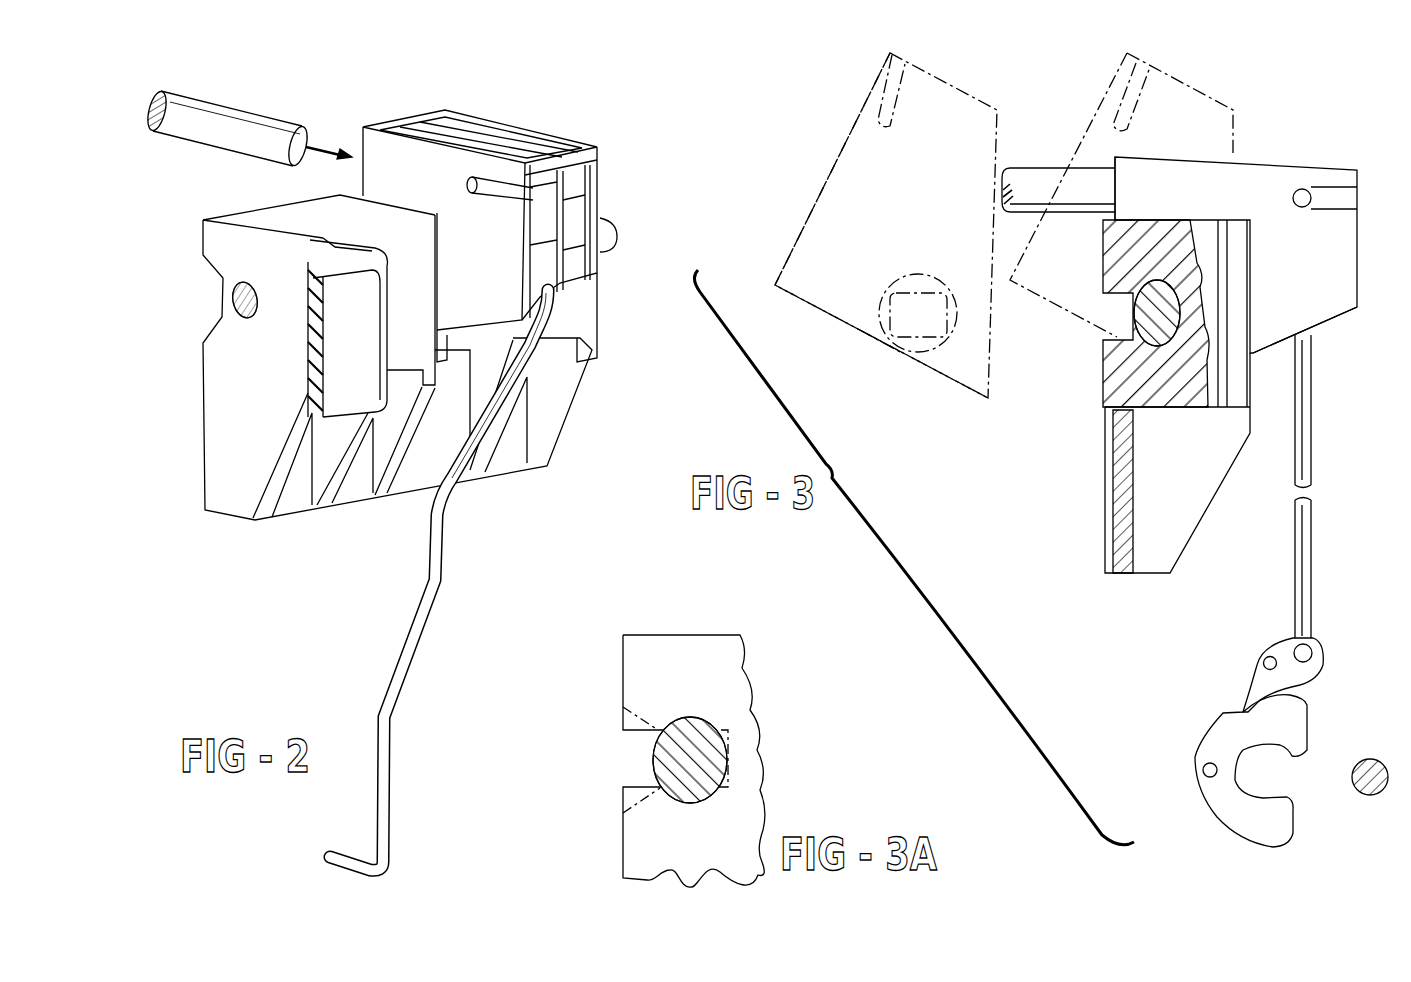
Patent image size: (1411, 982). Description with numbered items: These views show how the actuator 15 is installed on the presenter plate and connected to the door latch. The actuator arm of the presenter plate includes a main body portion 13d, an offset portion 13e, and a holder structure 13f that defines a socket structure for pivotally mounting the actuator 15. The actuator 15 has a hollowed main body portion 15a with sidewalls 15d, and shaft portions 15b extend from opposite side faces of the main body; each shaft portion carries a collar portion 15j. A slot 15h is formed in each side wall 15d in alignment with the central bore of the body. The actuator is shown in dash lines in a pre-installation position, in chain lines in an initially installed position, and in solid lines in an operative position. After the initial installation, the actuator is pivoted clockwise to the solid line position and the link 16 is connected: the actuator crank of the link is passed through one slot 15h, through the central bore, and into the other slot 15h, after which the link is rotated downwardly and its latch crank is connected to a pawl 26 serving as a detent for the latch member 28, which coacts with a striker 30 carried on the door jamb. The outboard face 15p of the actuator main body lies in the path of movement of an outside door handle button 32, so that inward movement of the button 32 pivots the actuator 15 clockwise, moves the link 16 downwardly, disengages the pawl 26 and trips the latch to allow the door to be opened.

In FIG. 2, the main body portion 13d is at (328, 346).
In FIG. 3, the main body portion 13d is at (1240, 382).
In FIG. 2, the offset portion 13e is at (335, 256).
In FIG. 2, the holder structure 13f is at (204, 233).
In FIG. 2, the actuator 15 is at (533, 129).
In FIG. 3, the actuator 15 is at (853, 119).
In FIG. 3, the main body portion 15a is at (820, 185).
In FIG. 3, the shaft portions 15b is at (888, 347).
In FIG. 3, the sidewalls 15d is at (881, 301).
In FIG. 3, the slot 15h is at (1323, 197).
In FIG. 3, the collar portion 15j is at (945, 348).
In FIG. 3, the outboard face 15p is at (1110, 187).
In FIG. 2, the link 16 is at (448, 571).
In FIG. 3, the link 16 is at (1312, 466).
In FIG. 3, the pawl 26 is at (1258, 681).
In FIG. 3, the latch member 28 is at (1310, 757).
In FIG. 3, the striker 30 is at (1366, 797).
In FIG. 2, the outside door handle button 32 is at (274, 116).
In FIG. 3, the outside door handle button 32 is at (1062, 215).